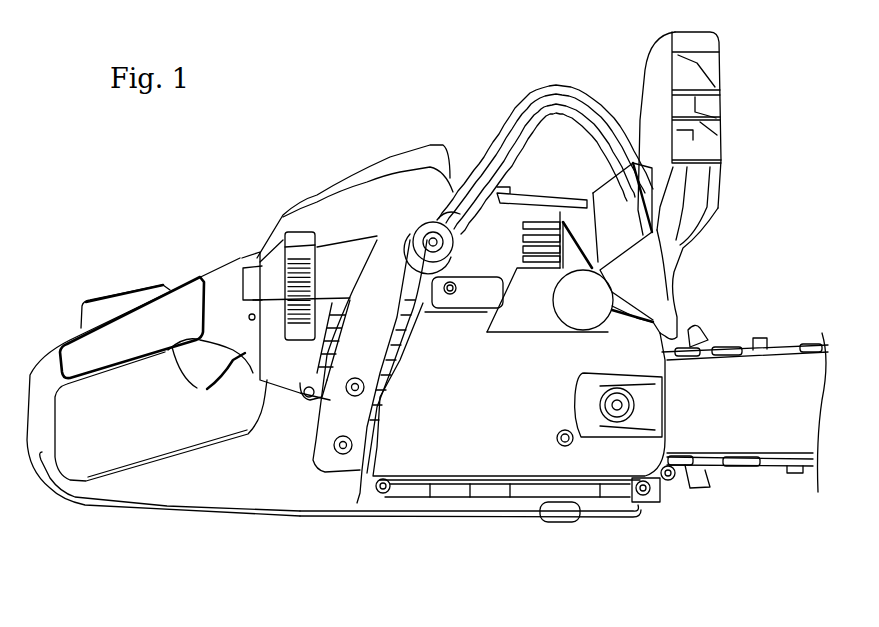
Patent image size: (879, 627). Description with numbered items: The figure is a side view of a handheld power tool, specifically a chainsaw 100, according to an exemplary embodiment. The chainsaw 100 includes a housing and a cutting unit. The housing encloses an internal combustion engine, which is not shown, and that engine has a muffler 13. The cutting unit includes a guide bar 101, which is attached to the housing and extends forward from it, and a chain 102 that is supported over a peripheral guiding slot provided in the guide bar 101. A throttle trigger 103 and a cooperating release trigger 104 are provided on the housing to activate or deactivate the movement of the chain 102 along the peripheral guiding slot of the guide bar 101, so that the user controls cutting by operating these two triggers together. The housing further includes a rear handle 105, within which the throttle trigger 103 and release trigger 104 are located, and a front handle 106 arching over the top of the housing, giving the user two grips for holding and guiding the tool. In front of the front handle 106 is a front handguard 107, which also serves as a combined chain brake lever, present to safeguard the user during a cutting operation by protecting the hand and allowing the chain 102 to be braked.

The chainsaw 100 is at (577, 526).
The guide bar 101 is at (775, 466).
The chain 102 is at (757, 343).
The throttle trigger 103 is at (187, 380).
The release trigger 104 is at (112, 302).
The rear handle 105 is at (46, 361).
The front handle 106 is at (543, 95).
The front handguard 107 is at (707, 42).
The muffler 13 is at (668, 276).